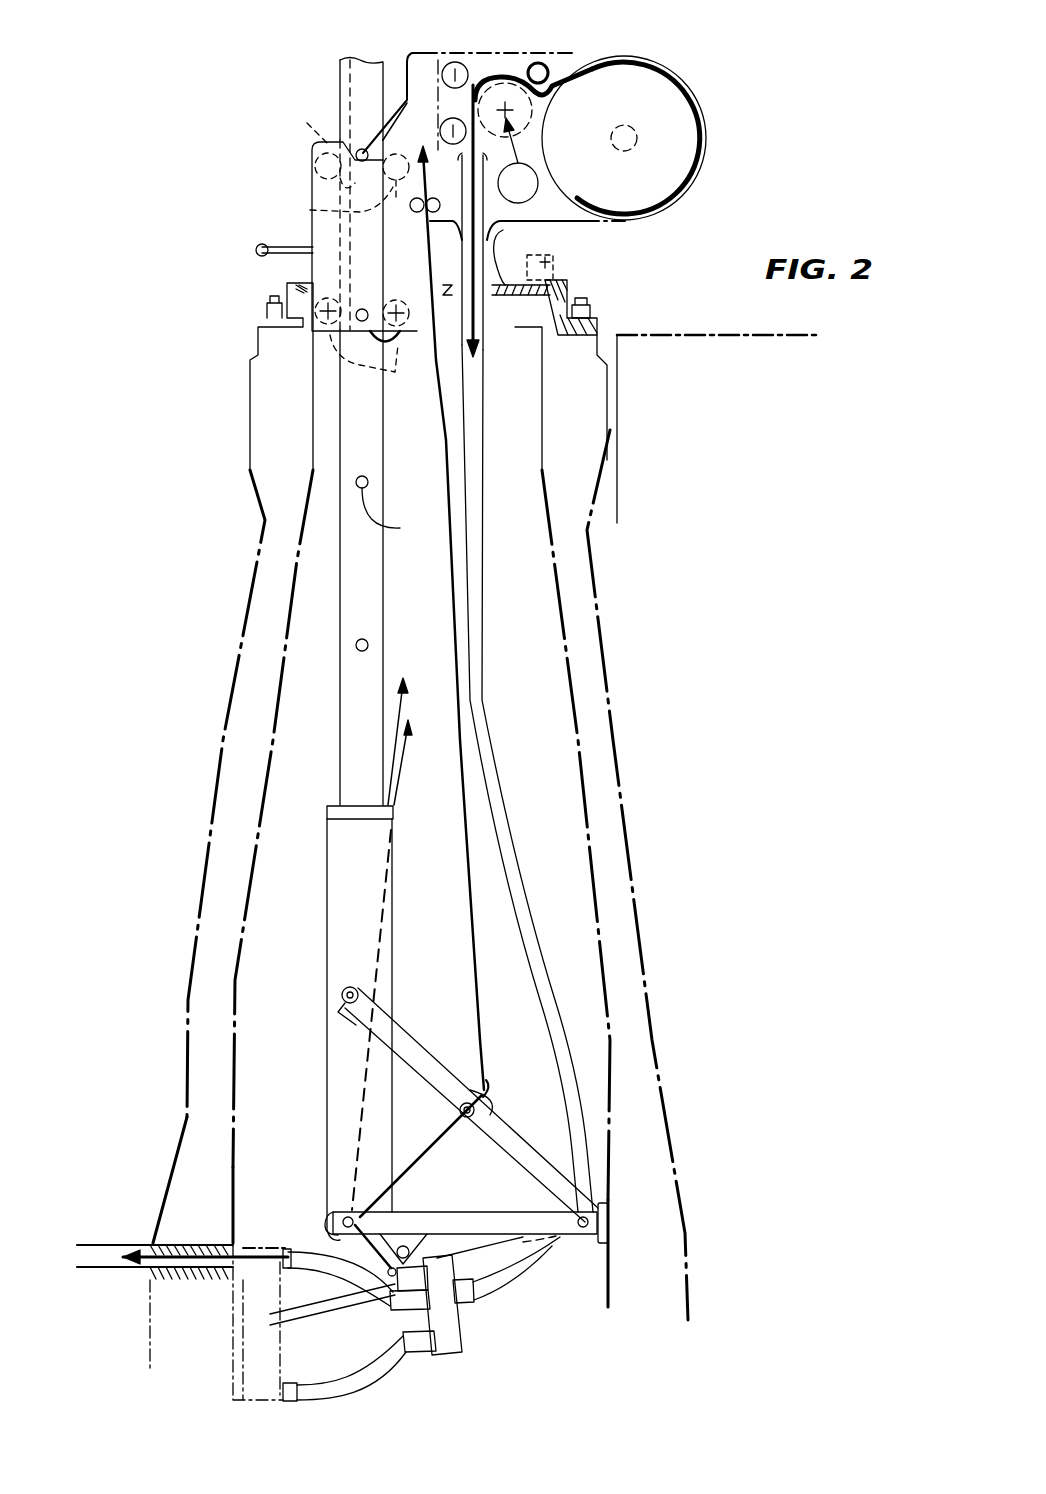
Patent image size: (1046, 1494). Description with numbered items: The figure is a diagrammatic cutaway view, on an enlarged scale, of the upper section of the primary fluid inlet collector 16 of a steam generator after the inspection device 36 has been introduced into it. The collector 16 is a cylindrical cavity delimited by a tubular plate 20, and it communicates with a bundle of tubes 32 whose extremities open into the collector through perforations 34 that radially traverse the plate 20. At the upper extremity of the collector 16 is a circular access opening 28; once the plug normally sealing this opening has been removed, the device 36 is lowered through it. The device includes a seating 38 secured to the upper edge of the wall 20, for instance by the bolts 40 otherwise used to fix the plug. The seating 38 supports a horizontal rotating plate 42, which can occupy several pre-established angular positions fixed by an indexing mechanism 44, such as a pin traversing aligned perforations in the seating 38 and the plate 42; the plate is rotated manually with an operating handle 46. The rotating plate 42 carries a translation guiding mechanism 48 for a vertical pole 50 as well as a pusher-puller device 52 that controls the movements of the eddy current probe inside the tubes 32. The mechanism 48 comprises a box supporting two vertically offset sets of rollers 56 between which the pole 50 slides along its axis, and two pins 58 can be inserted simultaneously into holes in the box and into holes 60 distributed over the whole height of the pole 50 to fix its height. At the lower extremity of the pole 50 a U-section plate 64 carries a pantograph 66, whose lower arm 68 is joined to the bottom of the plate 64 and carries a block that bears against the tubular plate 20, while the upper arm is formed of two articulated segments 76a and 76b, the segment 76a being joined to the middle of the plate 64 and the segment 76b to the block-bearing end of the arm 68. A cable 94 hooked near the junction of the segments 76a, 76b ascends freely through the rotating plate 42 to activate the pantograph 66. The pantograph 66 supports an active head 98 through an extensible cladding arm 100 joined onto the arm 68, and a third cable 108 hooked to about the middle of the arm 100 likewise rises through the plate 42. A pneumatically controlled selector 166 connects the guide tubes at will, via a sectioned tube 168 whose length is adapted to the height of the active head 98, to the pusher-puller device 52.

The primary fluid inlet collector 16 is at (605, 757).
The tubular plate 20 is at (640, 888).
The access opening 28 is at (535, 440).
The bundle of tubes 32 is at (85, 1243).
The perforations 34 is at (115, 1268).
The device 36 is at (421, 38).
The seating 38 is at (575, 290).
The bolts 40 is at (267, 310).
The rotating plate 42 is at (512, 243).
The indexing mechanism 44 is at (565, 262).
The operating handle 46 is at (262, 240).
The translation guiding mechanism 48 is at (312, 162).
The vertical pole 50 is at (338, 548).
The pusher-puller device 52 is at (565, 50).
The rollers 56 is at (307, 128).
The pins 58 is at (362, 150).
The holes 60 is at (362, 638).
The plate 64 is at (325, 912).
The pantograph 66 is at (545, 1148).
The lower arm 68 is at (490, 1225).
The segment 76a is at (400, 1045).
The segment 76b is at (493, 1140).
The cable 94 is at (410, 700).
The active head 98 is at (278, 1350).
The extensible cladding arm 100 is at (500, 1245).
The third cable 108 is at (400, 752).
The selector 166 is at (452, 1325).
The tube 168 is at (476, 710).